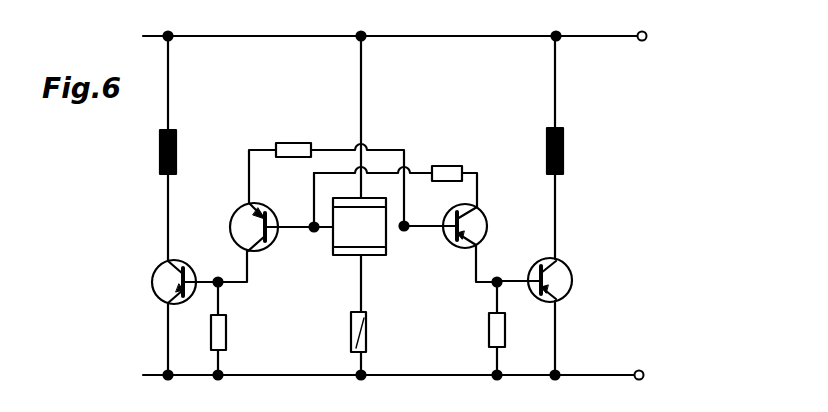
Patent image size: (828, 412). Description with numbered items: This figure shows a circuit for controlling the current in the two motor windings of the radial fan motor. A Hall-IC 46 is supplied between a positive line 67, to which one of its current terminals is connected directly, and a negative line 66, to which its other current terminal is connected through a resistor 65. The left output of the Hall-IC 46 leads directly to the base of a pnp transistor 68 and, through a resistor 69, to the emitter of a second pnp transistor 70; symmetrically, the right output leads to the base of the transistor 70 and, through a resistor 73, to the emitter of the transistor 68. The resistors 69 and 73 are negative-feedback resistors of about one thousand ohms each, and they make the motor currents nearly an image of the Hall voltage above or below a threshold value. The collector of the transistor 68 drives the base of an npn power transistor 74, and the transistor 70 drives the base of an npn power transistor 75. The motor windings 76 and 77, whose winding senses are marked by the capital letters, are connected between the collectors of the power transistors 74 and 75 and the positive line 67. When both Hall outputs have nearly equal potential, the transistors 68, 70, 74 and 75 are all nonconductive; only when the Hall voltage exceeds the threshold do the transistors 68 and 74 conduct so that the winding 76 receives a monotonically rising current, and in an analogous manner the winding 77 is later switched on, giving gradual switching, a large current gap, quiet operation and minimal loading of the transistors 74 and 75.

The Hall-IC 46 is at (388, 250).
The resistor 65 is at (367, 331).
The negative line 66 is at (420, 375).
The positive line 67 is at (444, 36).
The pnp transistor 68 is at (268, 247).
The resistor 69 is at (447, 168).
The pnp transistor 70 is at (487, 222).
The resistor 73 is at (292, 148).
The npn power transistor 74 is at (152, 286).
The npn power transistor 75 is at (572, 270).
The motor winding 76 is at (158, 152).
The motor winding 77 is at (563, 152).